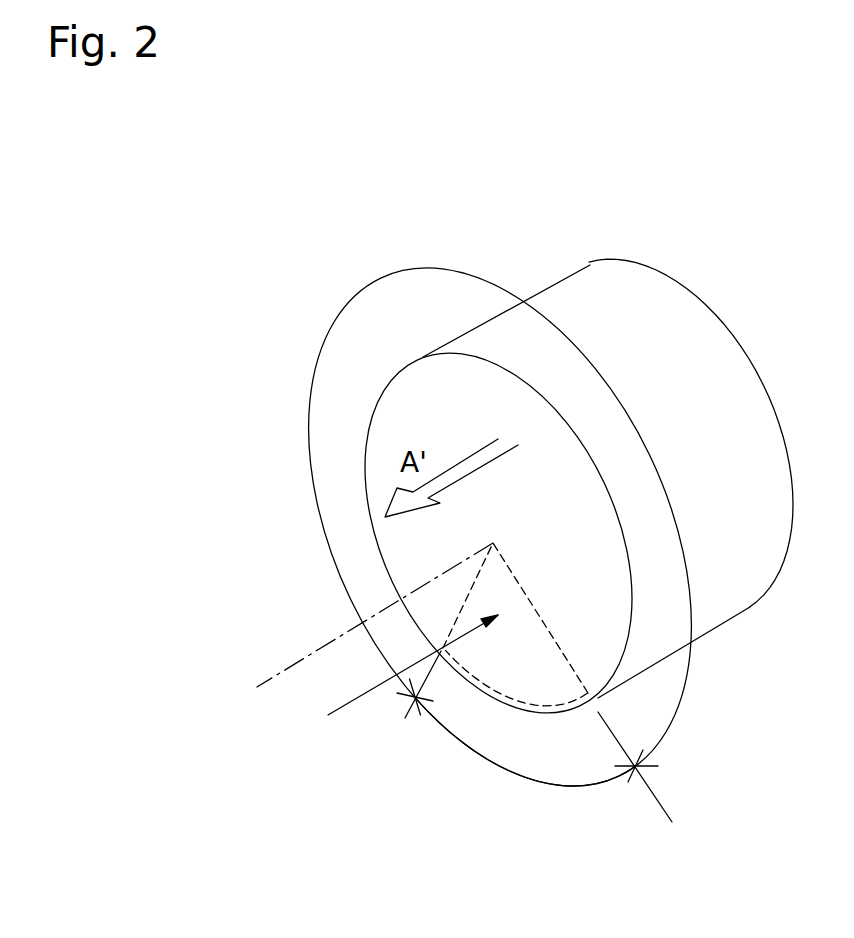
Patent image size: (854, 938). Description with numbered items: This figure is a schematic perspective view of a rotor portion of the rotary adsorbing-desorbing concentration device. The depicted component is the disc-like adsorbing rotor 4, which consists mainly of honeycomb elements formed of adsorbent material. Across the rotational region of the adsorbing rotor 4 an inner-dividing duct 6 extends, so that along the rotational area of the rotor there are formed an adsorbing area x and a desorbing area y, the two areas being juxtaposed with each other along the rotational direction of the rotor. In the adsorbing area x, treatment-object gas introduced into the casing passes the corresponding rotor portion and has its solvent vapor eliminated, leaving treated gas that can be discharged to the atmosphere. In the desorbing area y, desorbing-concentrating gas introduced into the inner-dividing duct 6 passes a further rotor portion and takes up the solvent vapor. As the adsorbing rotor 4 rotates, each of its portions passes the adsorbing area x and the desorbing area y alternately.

The adsorbing rotor 4 is at (626, 317).
The inner-dividing duct 6 is at (438, 706).
The adsorbing area x is at (423, 267).
The desorbing area y is at (528, 781).